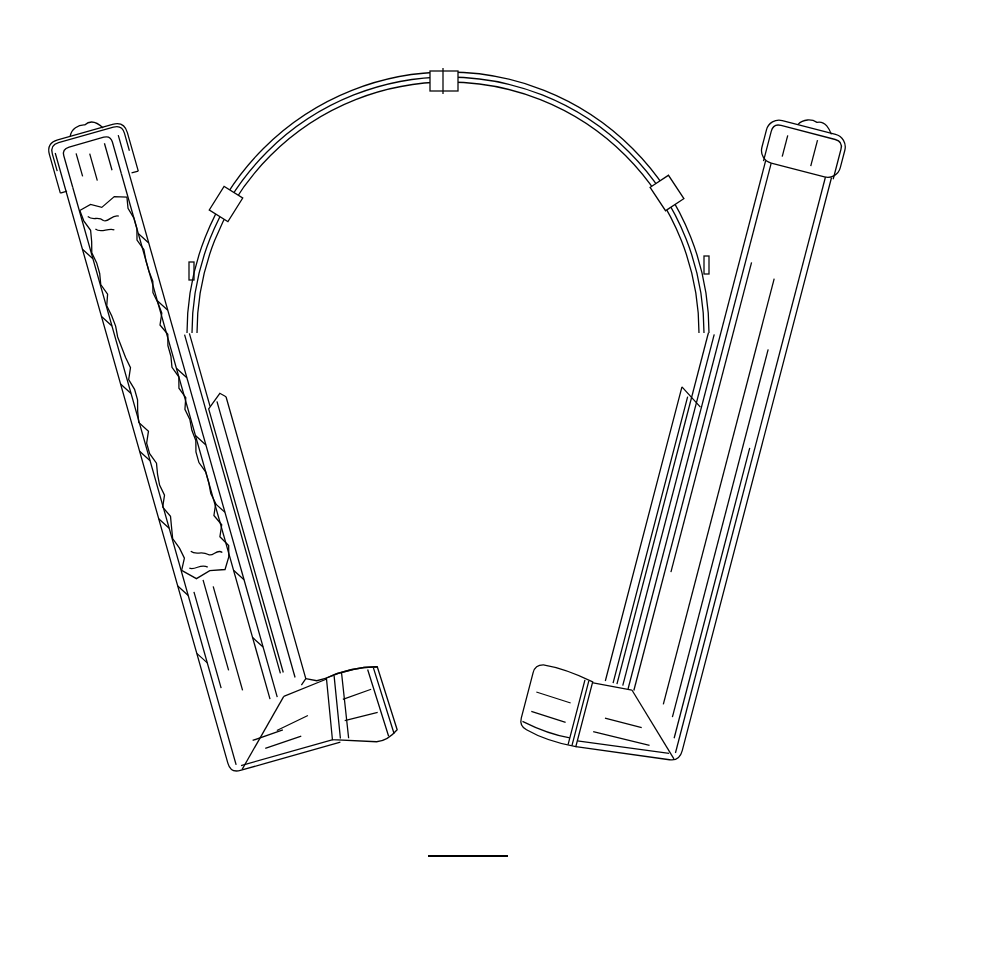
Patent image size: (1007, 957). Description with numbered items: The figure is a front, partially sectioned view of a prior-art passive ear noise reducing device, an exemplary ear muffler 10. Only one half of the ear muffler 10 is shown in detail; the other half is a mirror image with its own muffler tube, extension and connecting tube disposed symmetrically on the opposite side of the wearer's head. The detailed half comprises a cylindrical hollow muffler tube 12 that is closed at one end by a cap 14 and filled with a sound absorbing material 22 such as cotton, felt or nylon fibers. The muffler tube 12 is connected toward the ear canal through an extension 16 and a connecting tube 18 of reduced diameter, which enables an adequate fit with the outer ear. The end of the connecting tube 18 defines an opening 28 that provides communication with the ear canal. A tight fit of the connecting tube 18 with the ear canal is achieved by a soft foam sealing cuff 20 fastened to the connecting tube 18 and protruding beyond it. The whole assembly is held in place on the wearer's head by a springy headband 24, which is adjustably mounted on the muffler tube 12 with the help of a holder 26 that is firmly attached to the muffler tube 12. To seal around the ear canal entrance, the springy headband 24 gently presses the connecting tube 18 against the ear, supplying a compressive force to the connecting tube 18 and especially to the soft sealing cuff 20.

The ear muffler 10 is at (605, 92).
The muffler tube 12 is at (150, 250).
The cap 14 is at (127, 168).
The extension 16 is at (322, 753).
The connecting tube 18 is at (372, 707).
The soft foam sealing cuff 20 is at (337, 667).
The sound absorbing material 22 is at (128, 203).
The springy headband 24 is at (640, 150).
The holder 26 is at (247, 463).
The opening 28 is at (383, 673).